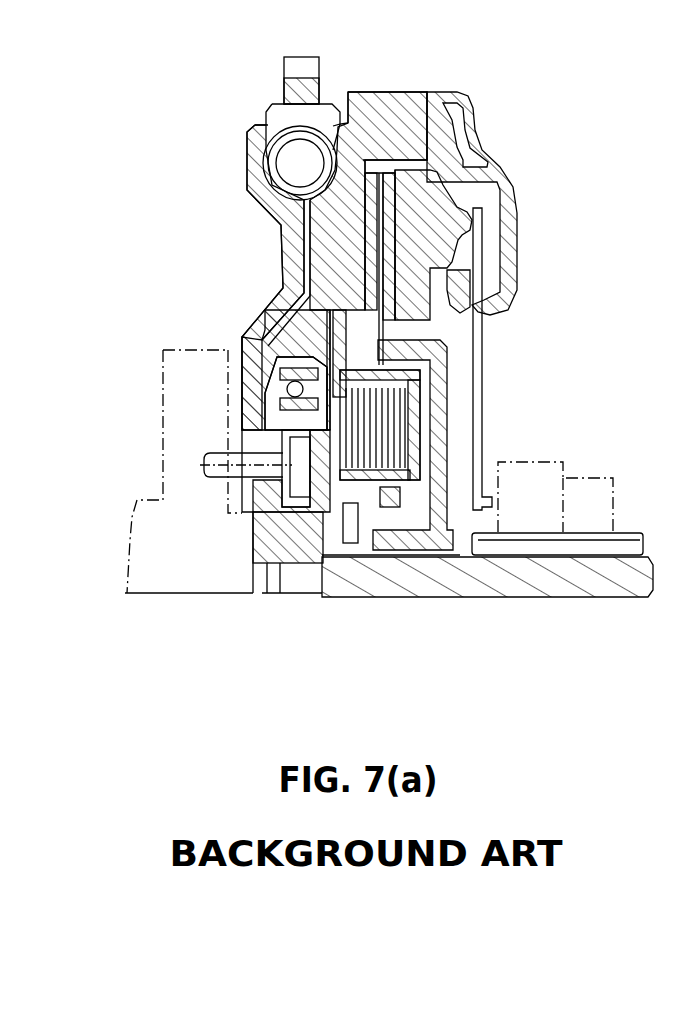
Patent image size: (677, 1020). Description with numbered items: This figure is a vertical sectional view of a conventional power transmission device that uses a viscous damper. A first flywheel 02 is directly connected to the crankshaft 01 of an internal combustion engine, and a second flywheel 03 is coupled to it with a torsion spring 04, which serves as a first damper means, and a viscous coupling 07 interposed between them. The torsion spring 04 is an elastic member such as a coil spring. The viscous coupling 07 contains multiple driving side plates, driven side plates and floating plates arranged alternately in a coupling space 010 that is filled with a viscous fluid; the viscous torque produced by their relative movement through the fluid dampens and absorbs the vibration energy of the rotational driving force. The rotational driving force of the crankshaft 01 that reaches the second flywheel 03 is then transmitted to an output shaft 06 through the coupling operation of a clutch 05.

The crankshaft 01 is at (173, 570).
The first flywheel 02 is at (252, 117).
The second flywheel 03 is at (378, 118).
The torsion spring 04 is at (287, 135).
The clutch 05 is at (381, 185).
The output shaft 06 is at (495, 583).
The viscous coupling 07 is at (398, 480).
The coupling space 010 is at (327, 565).